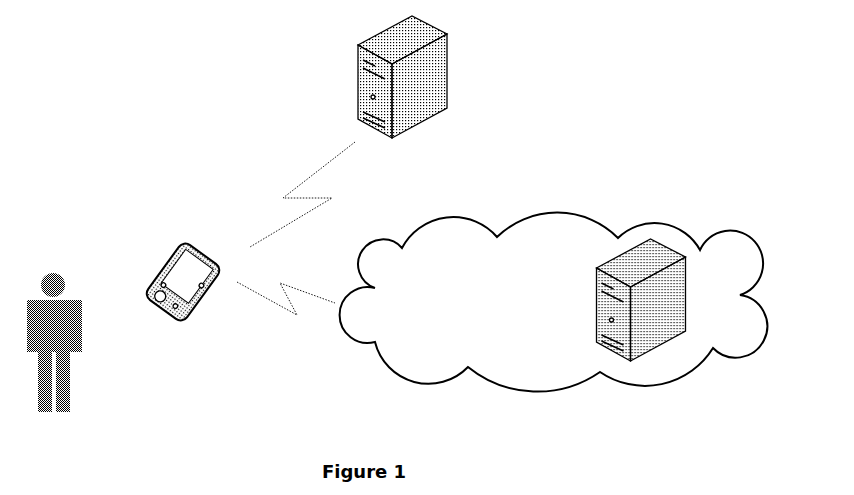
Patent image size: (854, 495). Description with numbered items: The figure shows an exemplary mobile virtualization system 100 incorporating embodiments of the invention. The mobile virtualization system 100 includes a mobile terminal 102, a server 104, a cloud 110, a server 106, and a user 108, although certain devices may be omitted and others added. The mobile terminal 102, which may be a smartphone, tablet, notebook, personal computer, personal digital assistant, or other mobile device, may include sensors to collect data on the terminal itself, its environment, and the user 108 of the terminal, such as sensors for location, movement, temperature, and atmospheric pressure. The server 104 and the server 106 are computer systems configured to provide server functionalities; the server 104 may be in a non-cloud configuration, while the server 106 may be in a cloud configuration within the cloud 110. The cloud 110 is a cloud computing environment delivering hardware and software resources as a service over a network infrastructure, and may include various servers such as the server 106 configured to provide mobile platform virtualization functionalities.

The mobile virtualization system 100 is at (153, 50).
The mobile terminal 102 is at (172, 268).
The server 104 is at (447, 68).
The server 106 is at (670, 265).
The user 108 is at (70, 397).
The cloud 110 is at (428, 265).